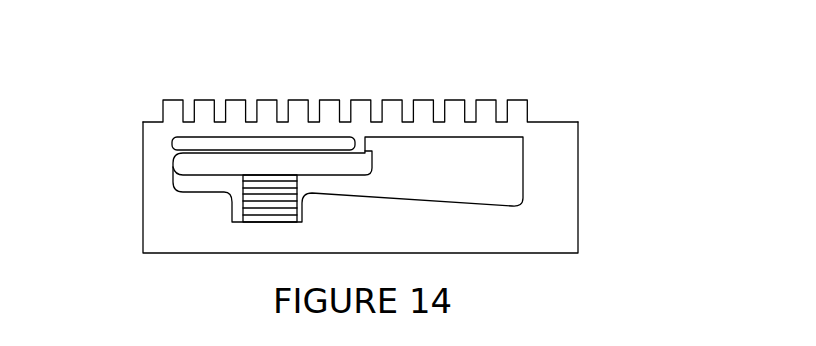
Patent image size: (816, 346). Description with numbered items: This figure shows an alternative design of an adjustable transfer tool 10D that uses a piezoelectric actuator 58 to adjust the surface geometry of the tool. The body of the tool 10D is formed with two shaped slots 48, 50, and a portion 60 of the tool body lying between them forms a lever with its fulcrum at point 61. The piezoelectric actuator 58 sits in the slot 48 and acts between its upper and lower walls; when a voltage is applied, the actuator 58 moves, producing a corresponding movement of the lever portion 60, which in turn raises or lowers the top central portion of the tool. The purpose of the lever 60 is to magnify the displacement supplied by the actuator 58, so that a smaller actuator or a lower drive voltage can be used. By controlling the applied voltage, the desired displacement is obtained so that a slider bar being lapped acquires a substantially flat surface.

The adjustable transfer tool 10D is at (562, 215).
The shaped slot 48 is at (500, 157).
The shaped slot 50 is at (179, 147).
The piezoelectric actuator 58 is at (262, 208).
The lever portion 60 is at (303, 165).
The fulcrum point 61 is at (176, 169).